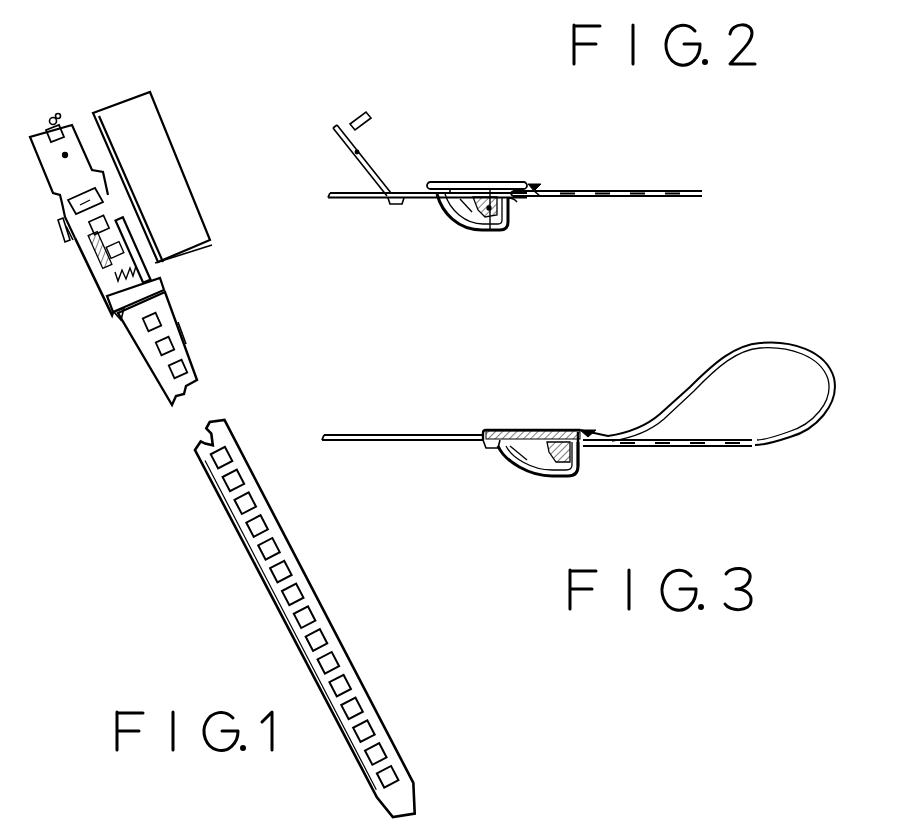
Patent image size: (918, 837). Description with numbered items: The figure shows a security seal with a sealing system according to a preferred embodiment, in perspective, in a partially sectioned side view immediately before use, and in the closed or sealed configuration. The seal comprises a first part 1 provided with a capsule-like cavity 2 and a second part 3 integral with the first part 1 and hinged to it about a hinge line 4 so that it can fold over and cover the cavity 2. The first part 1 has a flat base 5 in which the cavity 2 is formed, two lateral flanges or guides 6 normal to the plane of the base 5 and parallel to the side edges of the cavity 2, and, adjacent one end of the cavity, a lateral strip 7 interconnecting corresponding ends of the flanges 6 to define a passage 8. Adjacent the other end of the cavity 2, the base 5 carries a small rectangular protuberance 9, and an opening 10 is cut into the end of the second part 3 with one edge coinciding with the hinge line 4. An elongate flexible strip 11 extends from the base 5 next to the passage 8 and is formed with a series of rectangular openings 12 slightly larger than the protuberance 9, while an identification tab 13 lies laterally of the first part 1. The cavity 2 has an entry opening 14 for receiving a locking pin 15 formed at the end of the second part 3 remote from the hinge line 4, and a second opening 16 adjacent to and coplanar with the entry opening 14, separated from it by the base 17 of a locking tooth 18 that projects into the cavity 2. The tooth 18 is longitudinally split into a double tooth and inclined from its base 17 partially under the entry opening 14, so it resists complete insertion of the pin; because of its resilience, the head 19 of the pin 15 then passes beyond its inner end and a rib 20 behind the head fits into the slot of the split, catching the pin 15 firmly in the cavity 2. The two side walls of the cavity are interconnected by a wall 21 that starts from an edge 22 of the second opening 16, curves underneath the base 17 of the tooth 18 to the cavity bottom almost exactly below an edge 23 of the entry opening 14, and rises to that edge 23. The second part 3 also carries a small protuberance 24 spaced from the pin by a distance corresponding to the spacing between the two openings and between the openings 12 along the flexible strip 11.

In FIG. 1, the first part 1 is at (98, 384).
In FIG. 2, the capsule-like cavity 2 is at (470, 234).
In FIG. 1, the second part 3 is at (73, 167).
In FIG. 1, the hinge line 4 is at (74, 237).
In FIG. 2, the hinge line 4 is at (390, 194).
In FIG. 3, the hinge line 4 is at (491, 444).
In FIG. 1, the flat base 5 is at (74, 244).
In FIG. 1, the lateral flanges or guides 6 is at (200, 249).
In FIG. 2, the lateral flanges or guides 6 is at (465, 182).
In FIG. 3, the lateral flanges or guides 6 is at (531, 435).
In FIG. 1, the lateral strip 7 is at (120, 318).
In FIG. 2, the lateral strip 7 is at (518, 186).
In FIG. 3, the lateral strip 7 is at (588, 432).
In FIG. 1, the passage 8 is at (168, 318).
In FIG. 2, the passage 8 is at (538, 186).
In FIG. 1, the rectangular protuberance 9 is at (108, 198).
In FIG. 1, the opening 10 is at (124, 172).
In FIG. 1, the elongate flexible strip 11 is at (153, 392).
In FIG. 2, the elongate flexible strip 11 is at (650, 198).
In FIG. 3, the elongate flexible strip 11 is at (714, 447).
In FIG. 1, the rectangular openings 12 is at (176, 354).
In FIG. 2, the rectangular openings 12 is at (607, 190).
In FIG. 3, the rectangular openings 12 is at (690, 393).
In FIG. 1, the identification tab 13 is at (137, 132).
In FIG. 2, the identification tab 13 is at (350, 200).
In FIG. 3, the identification tab 13 is at (363, 435).
In FIG. 1, the entry opening 14 is at (164, 292).
In FIG. 2, the entry opening 14 is at (490, 203).
In FIG. 1, the locking pin 15 is at (50, 119).
In FIG. 1, the second opening 16 is at (133, 237).
In FIG. 2, the second opening 16 is at (460, 218).
In FIG. 3, the second opening 16 is at (538, 448).
In FIG. 1, the base of locking tooth 17 is at (108, 290).
In FIG. 2, the base of locking tooth 17 is at (493, 205).
In FIG. 2, the locking tooth 18 is at (494, 218).
In FIG. 3, the locking tooth 18 is at (560, 448).
In FIG. 1, the head 19 is at (60, 114).
In FIG. 2, the head 19 is at (362, 118).
In FIG. 2, the rib 20 is at (363, 137).
In FIG. 2, the wall 21 is at (477, 237).
In FIG. 3, the wall 21 is at (538, 470).
In FIG. 2, the edge of second opening 22 is at (452, 190).
In FIG. 2, the edge of entry opening 23 is at (518, 200).
In FIG. 1, the small protuberance 24 is at (66, 153).